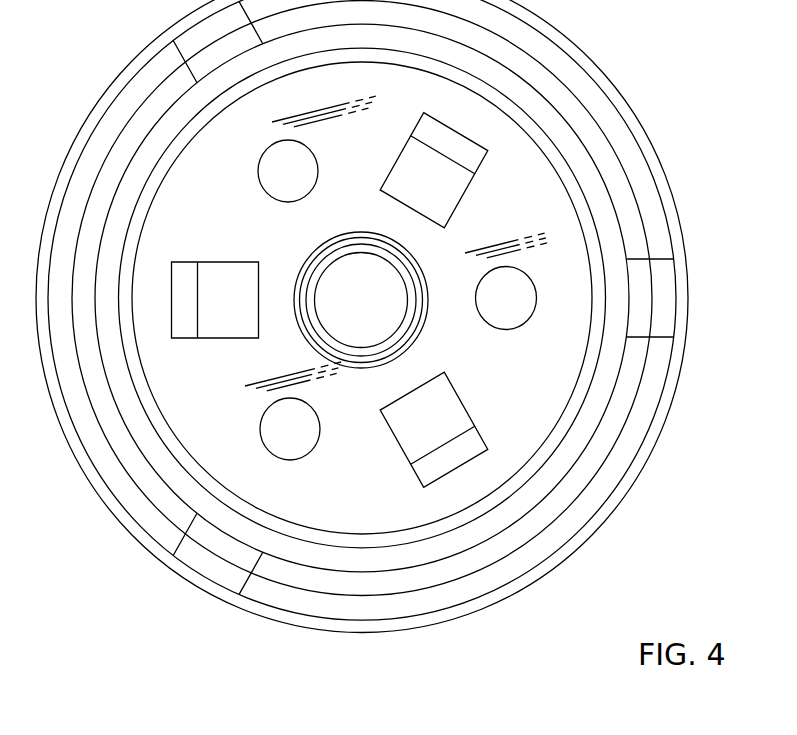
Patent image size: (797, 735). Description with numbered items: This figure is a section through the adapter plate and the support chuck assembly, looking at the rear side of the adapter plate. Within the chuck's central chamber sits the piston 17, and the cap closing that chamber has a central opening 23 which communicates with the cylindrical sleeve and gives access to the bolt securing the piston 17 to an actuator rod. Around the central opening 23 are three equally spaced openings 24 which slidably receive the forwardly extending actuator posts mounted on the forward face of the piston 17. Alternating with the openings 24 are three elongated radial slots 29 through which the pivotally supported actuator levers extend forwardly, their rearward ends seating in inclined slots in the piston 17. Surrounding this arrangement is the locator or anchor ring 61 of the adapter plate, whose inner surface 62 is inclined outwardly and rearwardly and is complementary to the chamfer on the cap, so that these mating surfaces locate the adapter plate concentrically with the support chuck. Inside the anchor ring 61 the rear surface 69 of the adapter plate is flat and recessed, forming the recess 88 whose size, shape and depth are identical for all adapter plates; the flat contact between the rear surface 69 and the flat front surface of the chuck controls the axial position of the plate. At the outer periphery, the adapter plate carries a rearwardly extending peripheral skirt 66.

The piston 17 is at (185, 330).
The central opening 23 is at (390, 320).
The openings 24 is at (314, 152).
The elongated radial slots 29 is at (222, 262).
The anchor ring 61 is at (372, 572).
The inner surface 62 is at (327, 538).
The peripheral skirt 66 is at (673, 212).
The rear surface 69 is at (222, 438).
The recess 88 is at (553, 387).